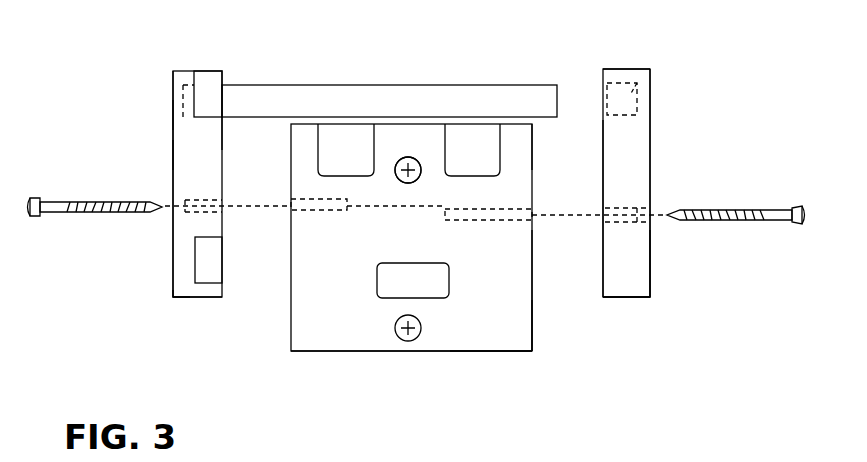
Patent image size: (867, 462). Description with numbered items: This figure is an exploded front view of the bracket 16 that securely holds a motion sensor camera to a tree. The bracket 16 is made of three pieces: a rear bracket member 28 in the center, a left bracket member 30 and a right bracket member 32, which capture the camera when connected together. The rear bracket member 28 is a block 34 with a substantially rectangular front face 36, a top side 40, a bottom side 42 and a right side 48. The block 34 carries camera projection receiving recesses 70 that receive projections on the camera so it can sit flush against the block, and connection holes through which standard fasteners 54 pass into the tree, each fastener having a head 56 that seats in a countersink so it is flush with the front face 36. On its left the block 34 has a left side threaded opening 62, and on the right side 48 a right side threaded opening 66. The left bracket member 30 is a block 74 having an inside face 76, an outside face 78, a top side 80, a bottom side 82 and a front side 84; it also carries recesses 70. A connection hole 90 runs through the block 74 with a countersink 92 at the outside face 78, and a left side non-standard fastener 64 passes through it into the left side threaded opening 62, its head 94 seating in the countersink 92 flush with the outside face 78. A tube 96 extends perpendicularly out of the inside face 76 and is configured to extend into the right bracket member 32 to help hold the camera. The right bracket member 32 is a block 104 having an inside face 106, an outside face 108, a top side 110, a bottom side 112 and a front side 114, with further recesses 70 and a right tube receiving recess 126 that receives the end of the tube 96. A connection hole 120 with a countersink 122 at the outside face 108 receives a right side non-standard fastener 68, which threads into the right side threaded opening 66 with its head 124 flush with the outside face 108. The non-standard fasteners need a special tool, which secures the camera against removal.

The top side 80 is at (187, 71).
The camera projection receiving recesses 70 is at (208, 80).
The bracket 16 is at (296, 72).
The tube 96 is at (352, 98).
The head 56 is at (407, 157).
The top side 40 is at (515, 124).
The inside face 106 is at (603, 128).
The top side 110 is at (620, 69).
The right bracket member 32 is at (648, 63).
The right tube receiving recess 126 is at (637, 83).
The outside face 108 is at (650, 96).
The front side 114 is at (632, 135).
The left bracket member 30 is at (173, 95).
The outside face 78 is at (175, 116).
The front side 84 is at (185, 155).
The inside face 76 is at (222, 132).
The right side 48 is at (533, 143).
The standard fastener 54 is at (420, 175).
The countersink 122 is at (647, 200).
The head 94 is at (32, 200).
The left side non-standard fastener 64 is at (82, 200).
The right side non-standard fastener 68 is at (718, 212).
The head 124 is at (800, 215).
The countersink 92 is at (178, 218).
The connection hole 90 is at (210, 213).
The left side threaded opening 62 is at (315, 203).
The right side threaded opening 66 is at (490, 215).
The connection hole 120 is at (620, 218).
The block 104 is at (655, 268).
The front face 36 is at (500, 283).
The bottom side 82 is at (198, 297).
The block 74 is at (180, 297).
The bottom side 112 is at (625, 297).
The bottom side 42 is at (368, 351).
The rear bracket member 28 is at (490, 351).
The block 34 is at (538, 333).